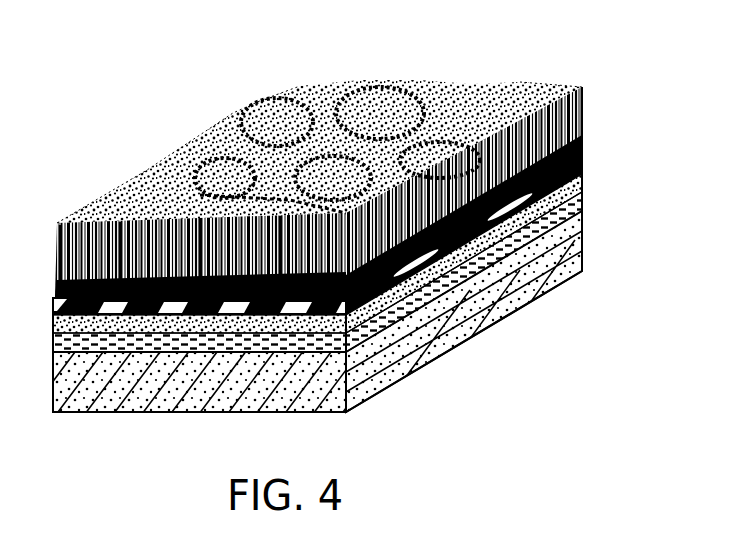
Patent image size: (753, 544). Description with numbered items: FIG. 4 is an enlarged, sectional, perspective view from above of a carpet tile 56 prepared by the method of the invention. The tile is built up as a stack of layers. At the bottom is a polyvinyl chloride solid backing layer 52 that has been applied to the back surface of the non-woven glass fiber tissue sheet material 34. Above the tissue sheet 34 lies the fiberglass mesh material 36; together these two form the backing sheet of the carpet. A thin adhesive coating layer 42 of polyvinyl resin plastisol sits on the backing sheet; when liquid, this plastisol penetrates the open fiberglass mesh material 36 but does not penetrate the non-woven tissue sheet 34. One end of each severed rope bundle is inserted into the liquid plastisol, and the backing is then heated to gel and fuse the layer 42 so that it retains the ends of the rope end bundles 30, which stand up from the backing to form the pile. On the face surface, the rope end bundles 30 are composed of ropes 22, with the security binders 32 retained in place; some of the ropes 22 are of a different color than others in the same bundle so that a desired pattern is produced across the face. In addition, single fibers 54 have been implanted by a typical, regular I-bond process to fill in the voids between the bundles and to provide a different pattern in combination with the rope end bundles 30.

The ropes 22 is at (238, 124).
The rope end bundles 30 is at (58, 245).
The security binders 32 is at (582, 111).
The non-woven glass fiber tissue sheet material 34 is at (582, 212).
The fiberglass mesh material 36 is at (582, 184).
The adhesive coating layer 42 is at (582, 163).
The polyvinyl chloride solid backing layer 52 is at (483, 327).
The single fibers 54 is at (552, 87).
The carpet tile 56 is at (77, 164).